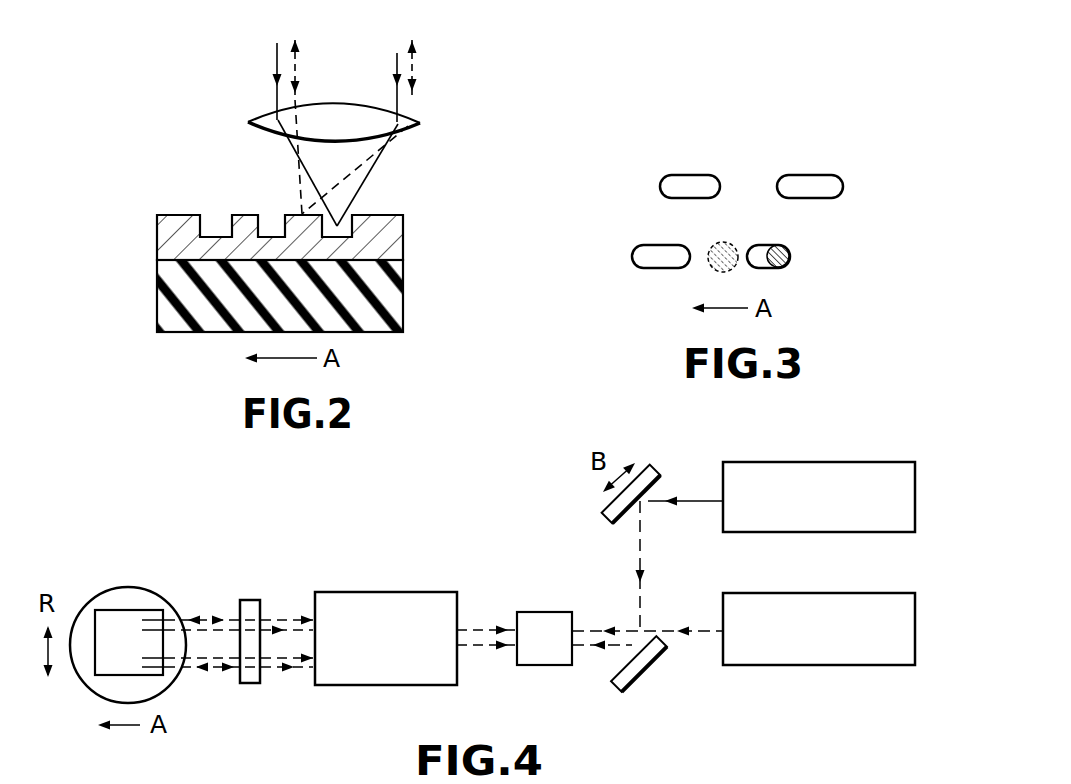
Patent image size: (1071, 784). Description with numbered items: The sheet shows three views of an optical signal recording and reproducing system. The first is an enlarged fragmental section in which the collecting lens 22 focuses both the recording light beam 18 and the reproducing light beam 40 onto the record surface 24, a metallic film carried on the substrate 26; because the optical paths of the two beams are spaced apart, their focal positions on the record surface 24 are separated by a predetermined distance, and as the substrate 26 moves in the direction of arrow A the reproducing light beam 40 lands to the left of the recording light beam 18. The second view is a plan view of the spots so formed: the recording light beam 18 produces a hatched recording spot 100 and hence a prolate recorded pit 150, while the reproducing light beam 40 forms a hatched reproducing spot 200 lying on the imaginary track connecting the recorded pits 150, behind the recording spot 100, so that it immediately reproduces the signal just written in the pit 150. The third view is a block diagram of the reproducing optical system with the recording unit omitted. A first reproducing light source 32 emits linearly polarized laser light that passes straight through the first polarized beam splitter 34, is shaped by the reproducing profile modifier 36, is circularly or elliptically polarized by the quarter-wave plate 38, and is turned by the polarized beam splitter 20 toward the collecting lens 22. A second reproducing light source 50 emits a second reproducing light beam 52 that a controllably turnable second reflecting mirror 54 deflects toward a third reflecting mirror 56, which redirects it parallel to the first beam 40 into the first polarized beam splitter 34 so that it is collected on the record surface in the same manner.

In FIG. 2, the recording light beam 18 is at (396, 61).
In FIG. 2, the reproducing light beam 40 is at (413, 72).
In FIG. 4, the reproducing light beam 40 is at (264, 657).
In FIG. 2, the collecting lens 22 is at (406, 128).
In FIG. 4, the collecting lens 22 is at (123, 588).
In FIG. 2, the record surface 24 is at (405, 234).
In FIG. 2, the substrate 26 is at (388, 303).
In FIG. 3, the reproducing spot 200 is at (713, 246).
In FIG. 3, the recording spot 100 is at (787, 252).
In FIG. 3, the recorded pit 150 is at (763, 268).
In FIG. 4, the polarized beam splitter 20 is at (137, 610).
In FIG. 4, the quarter-wave plate 38 is at (258, 600).
In FIG. 4, the second reproducing light beam 52 is at (293, 633).
In FIG. 4, the reproducing profile modifier 36 is at (402, 578).
In FIG. 4, the first polarized beam splitter 34 is at (537, 618).
In FIG. 4, the second reflecting mirror 54 is at (657, 467).
In FIG. 4, the third reflecting mirror 56 is at (642, 670).
In FIG. 4, the second reproducing light source 50 is at (827, 462).
In FIG. 4, the first reproducing light source 32 is at (790, 593).